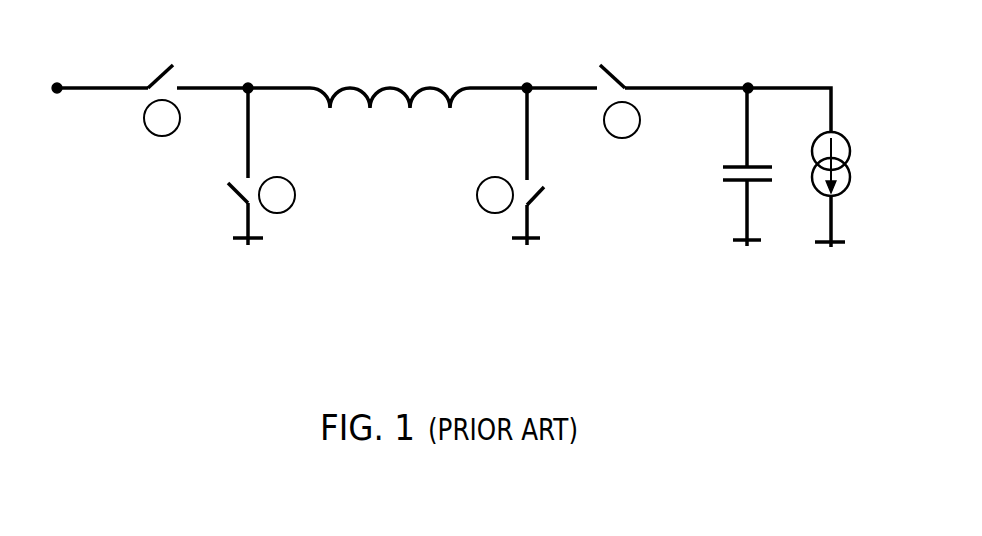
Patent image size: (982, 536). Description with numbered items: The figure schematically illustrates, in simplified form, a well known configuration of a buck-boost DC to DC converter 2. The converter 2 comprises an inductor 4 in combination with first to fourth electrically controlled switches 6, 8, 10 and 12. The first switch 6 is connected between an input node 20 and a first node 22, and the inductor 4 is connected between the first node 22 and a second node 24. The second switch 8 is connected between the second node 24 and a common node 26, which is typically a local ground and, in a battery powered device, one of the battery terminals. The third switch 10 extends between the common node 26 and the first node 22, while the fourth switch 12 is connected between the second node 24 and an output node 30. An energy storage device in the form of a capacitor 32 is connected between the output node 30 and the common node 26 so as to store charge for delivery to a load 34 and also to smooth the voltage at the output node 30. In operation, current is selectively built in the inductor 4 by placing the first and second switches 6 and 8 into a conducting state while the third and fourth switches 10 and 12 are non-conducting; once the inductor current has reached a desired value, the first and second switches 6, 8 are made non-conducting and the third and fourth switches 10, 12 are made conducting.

The buck-boost converter 2 is at (63, 306).
The inductor 4 is at (390, 87).
The first switch 6 is at (173, 63).
The second switch 8 is at (544, 187).
The third switch 10 is at (227, 185).
The fourth switch 12 is at (600, 65).
The input node 20 is at (58, 93).
The first node 22 is at (246, 84).
The second node 24 is at (525, 85).
The common node 26 is at (250, 241).
The output node 30 is at (744, 92).
The capacitor 32 is at (725, 180).
The load 34 is at (850, 185).